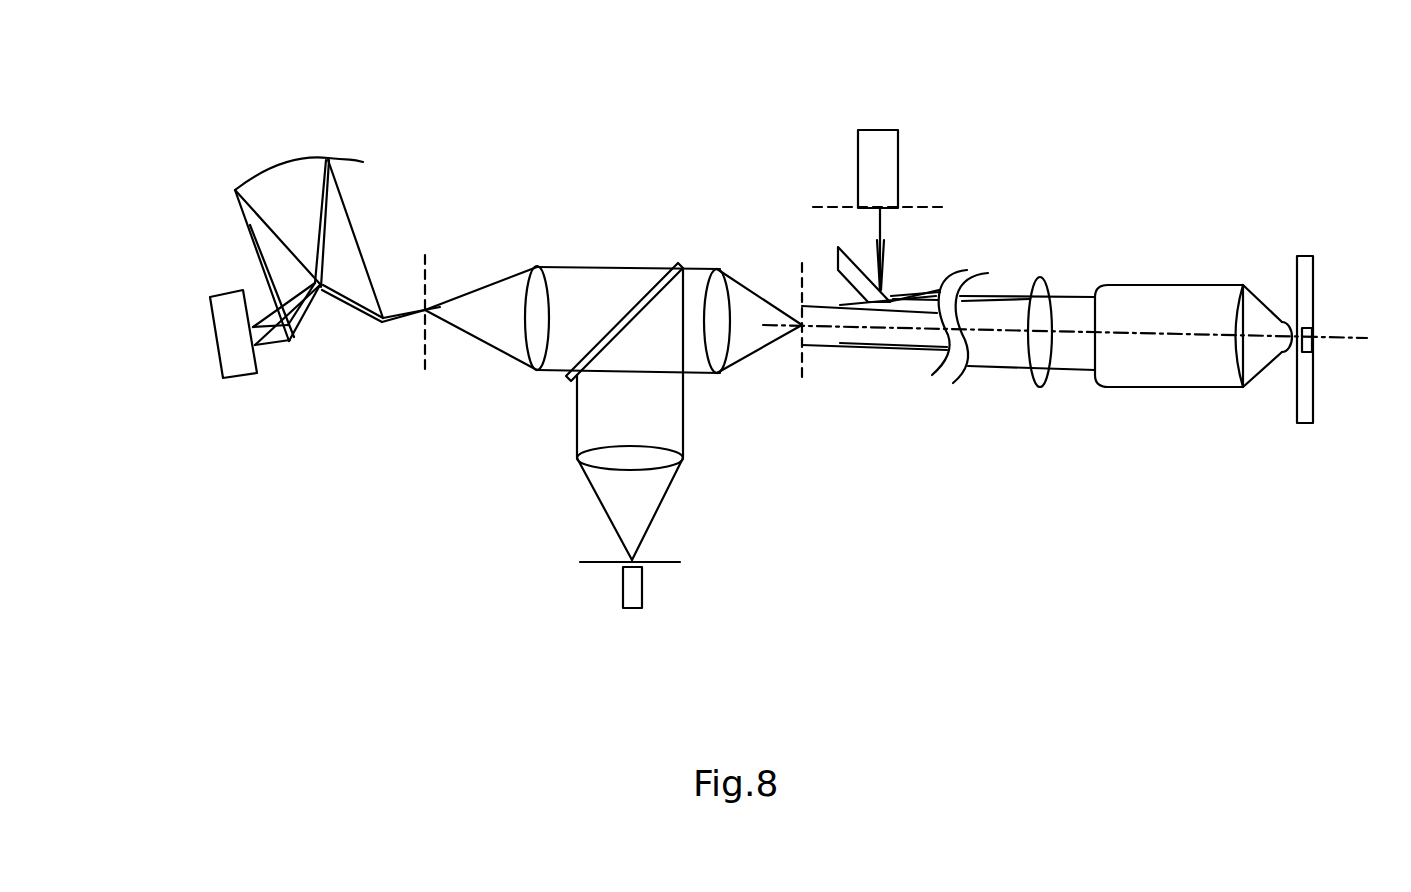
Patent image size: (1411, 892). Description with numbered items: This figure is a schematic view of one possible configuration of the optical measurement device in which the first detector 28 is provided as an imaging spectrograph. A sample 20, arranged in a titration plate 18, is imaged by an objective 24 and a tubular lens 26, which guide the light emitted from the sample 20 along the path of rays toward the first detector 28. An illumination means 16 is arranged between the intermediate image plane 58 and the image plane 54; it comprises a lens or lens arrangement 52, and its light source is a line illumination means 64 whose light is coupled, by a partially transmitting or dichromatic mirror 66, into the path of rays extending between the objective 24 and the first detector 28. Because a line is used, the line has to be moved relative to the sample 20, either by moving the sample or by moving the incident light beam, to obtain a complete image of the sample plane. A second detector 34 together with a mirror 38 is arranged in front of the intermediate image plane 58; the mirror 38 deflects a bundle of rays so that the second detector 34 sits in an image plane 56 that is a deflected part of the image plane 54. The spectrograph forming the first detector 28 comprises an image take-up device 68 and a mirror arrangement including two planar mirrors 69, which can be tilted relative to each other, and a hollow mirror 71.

The illumination means 16 is at (705, 533).
The titration plate 18 is at (1303, 407).
The sample 20 is at (1313, 333).
The objective 24 is at (1148, 295).
The tubular lens 26 is at (1040, 283).
The first detector 28 is at (150, 260).
The second detector 34 is at (873, 150).
The mirror 38 is at (838, 263).
The lens or lens arrangement 52 is at (657, 462).
The image plane 54 is at (422, 346).
The image plane 56 is at (828, 207).
The intermediate image plane 58 is at (805, 367).
The line illumination means 64 is at (633, 598).
The partially transmitting or dichromatic mirror 66 is at (657, 293).
The image take-up device 68 is at (233, 357).
The planar mirrors 69 is at (363, 313).
The hollow mirror 71 is at (270, 176).